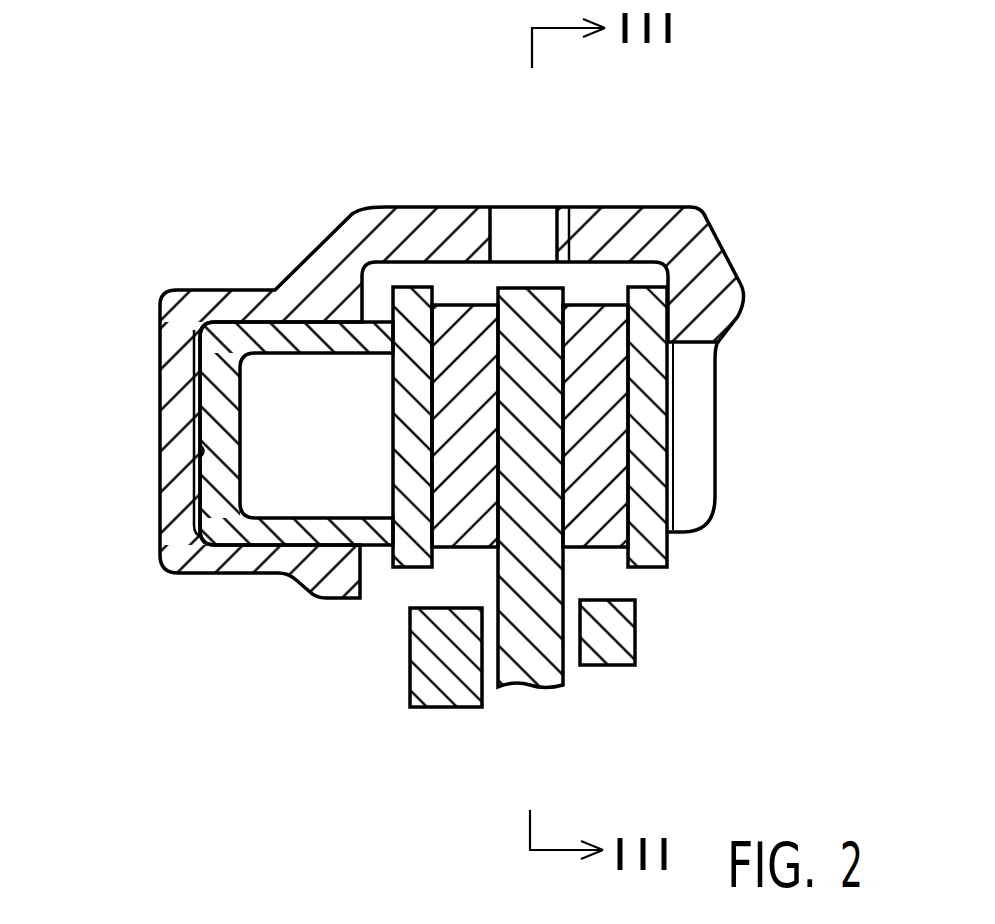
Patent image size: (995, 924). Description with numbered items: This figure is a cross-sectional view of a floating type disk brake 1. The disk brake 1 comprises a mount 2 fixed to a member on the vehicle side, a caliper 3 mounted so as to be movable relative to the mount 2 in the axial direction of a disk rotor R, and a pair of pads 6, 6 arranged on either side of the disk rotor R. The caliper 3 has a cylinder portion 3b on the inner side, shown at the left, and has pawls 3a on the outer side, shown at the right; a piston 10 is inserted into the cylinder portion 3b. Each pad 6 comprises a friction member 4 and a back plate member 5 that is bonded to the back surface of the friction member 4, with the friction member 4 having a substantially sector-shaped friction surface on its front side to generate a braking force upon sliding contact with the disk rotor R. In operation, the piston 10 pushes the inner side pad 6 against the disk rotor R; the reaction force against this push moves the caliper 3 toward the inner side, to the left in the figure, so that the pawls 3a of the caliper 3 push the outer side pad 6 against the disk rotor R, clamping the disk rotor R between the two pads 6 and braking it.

The disk brake 1 is at (298, 158).
The mount 2 is at (695, 670).
The caliper 3 is at (268, 259).
The pawl 3a is at (688, 422).
The cylinder portion 3b is at (202, 455).
The friction member 4 is at (595, 342).
The back plate member 5 is at (638, 300).
The pad 6 is at (491, 136).
The piston 10 is at (207, 370).
The disk rotor R is at (553, 668).